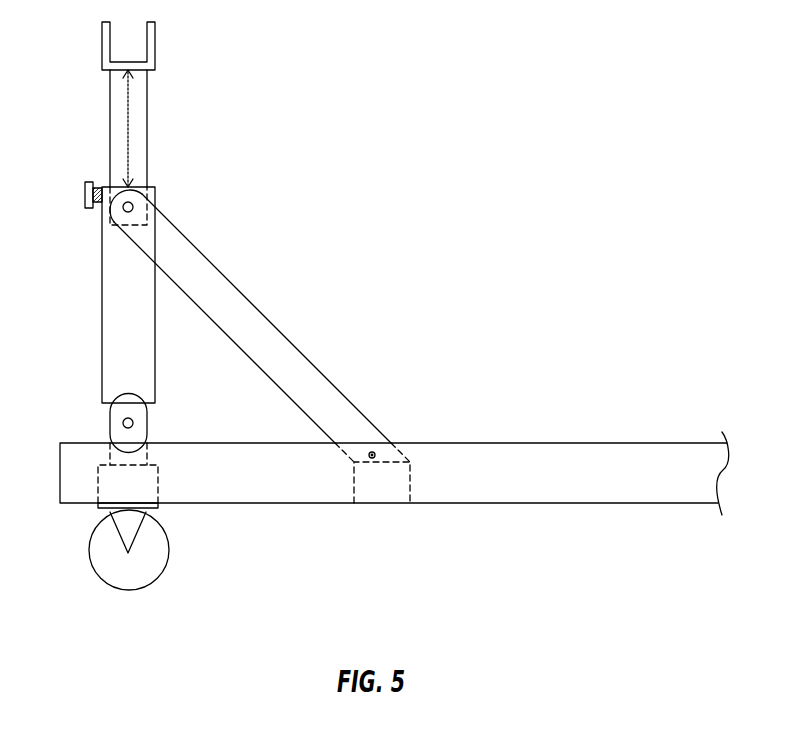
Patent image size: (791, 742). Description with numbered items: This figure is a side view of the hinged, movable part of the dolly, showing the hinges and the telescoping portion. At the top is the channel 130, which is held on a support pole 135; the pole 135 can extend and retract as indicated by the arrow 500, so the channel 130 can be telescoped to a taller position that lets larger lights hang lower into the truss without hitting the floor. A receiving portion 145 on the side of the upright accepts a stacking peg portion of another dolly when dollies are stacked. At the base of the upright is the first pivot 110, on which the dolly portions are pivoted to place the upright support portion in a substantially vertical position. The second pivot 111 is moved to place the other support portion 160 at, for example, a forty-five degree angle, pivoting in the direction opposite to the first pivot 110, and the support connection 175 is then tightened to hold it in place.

The channel 130 is at (155, 45).
The support pole 135 is at (138, 140).
The arrow 500 is at (128, 130).
The receiving portion 145 is at (85, 195).
The second pivot 111 is at (147, 205).
The support portion 160 is at (252, 320).
The support connection 175 is at (387, 447).
The first pivot 110 is at (110, 427).